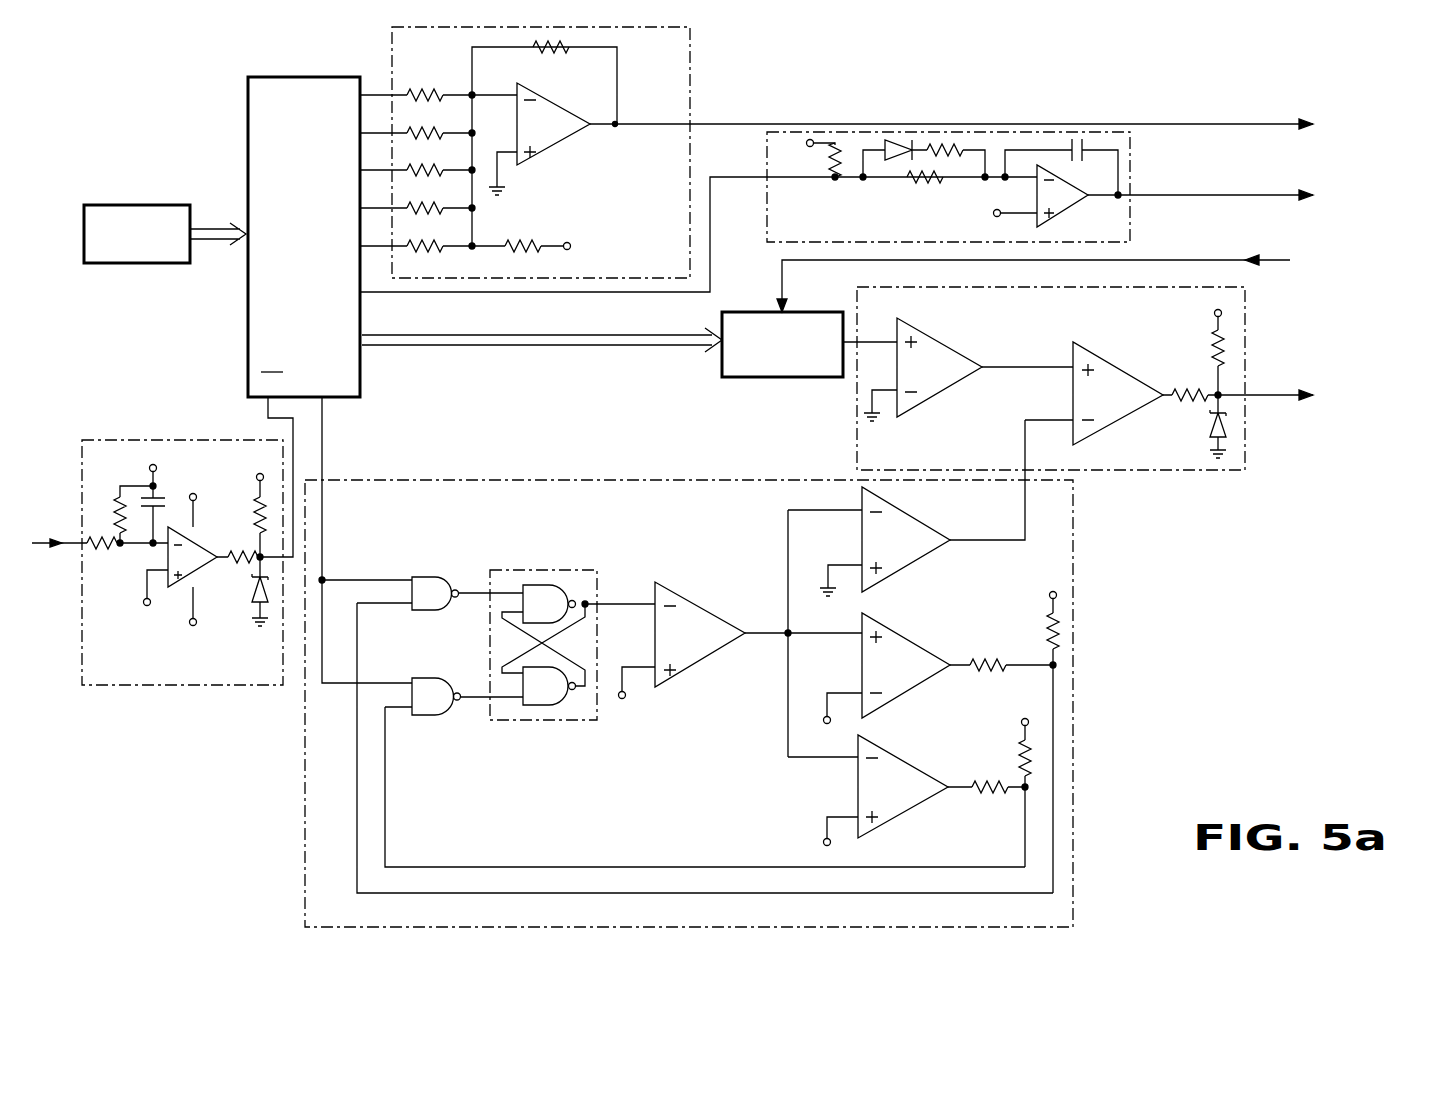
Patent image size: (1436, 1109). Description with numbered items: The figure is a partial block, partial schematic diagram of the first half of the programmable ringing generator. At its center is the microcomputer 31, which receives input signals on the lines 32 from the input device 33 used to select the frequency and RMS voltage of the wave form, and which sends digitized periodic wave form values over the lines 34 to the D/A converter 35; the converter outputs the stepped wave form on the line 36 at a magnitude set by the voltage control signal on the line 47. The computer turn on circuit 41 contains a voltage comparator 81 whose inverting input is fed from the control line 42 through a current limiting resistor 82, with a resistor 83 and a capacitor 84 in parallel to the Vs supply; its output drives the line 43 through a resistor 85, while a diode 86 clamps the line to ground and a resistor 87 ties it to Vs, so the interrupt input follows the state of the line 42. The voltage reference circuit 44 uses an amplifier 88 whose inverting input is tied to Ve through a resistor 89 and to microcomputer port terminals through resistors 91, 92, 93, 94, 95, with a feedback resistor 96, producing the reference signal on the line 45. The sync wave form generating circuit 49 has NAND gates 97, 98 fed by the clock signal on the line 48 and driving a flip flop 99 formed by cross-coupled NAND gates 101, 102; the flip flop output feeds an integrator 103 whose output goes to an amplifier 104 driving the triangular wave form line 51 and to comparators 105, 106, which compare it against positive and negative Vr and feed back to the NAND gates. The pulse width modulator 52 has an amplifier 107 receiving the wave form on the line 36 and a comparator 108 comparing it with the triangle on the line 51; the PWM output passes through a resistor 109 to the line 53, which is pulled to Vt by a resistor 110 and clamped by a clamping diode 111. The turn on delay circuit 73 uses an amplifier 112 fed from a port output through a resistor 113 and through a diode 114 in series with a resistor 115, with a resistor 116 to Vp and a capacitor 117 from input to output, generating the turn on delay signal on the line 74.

The microcomputer 31 is at (296, 85).
The lines 32 is at (212, 243).
The input device 33 is at (102, 206).
The lines 34 is at (592, 347).
The D/A converter 35 is at (764, 314).
The line 36 is at (842, 373).
The computer turn on circuit 41 is at (162, 528).
The line 42 is at (53, 544).
The line 43 is at (253, 416).
The voltage reference circuit 44 is at (562, 152).
The line 45 is at (1226, 124).
The line 47 is at (1178, 258).
The line 48 is at (325, 444).
The sync wave form generating circuit 49 is at (733, 673).
The line 51 is at (1024, 527).
The pulse width modulator 52 is at (1075, 407).
The line 53 is at (1272, 399).
The turn on delay circuit 73 is at (777, 189).
The line 74 is at (1233, 195).
The voltage comparator 81 is at (181, 560).
The current limiting resistor 82 is at (88, 540).
The resistor 83 is at (112, 502).
The capacitor 84 is at (151, 486).
The resistor 85 is at (237, 548).
The diode 86 is at (256, 583).
The resistor 87 is at (258, 501).
The amplifier 88 is at (545, 138).
The resistor 89 is at (528, 238).
The resistor 91 is at (426, 86).
The resistor 92 is at (433, 134).
The resistor 93 is at (433, 171).
The resistor 94 is at (433, 209).
The resistor 95 is at (433, 247).
The feedback resistor 96 is at (565, 48).
The NAND gate 97 is at (435, 591).
The NAND gate 98 is at (435, 695).
The flip flop 99 is at (543, 629).
The NAND gate 101 is at (546, 602).
The NAND gate 102 is at (546, 684).
The integrator 103 is at (691, 588).
The amplifier 104 is at (920, 520).
The comparator 105 is at (906, 640).
The comparator 106 is at (903, 760).
The amplifier 107 is at (942, 352).
The comparator 108 is at (1099, 358).
The resistor 109 is at (1176, 384).
The resistor 110 is at (1242, 335).
The clamping diode 111 is at (1202, 421).
The amplifier 112 is at (1130, 158).
The resistor 113 is at (923, 182).
The diode 114 is at (922, 133).
The resistor 115 is at (946, 130).
The resistor 116 is at (852, 133).
The capacitor 117 is at (1072, 135).